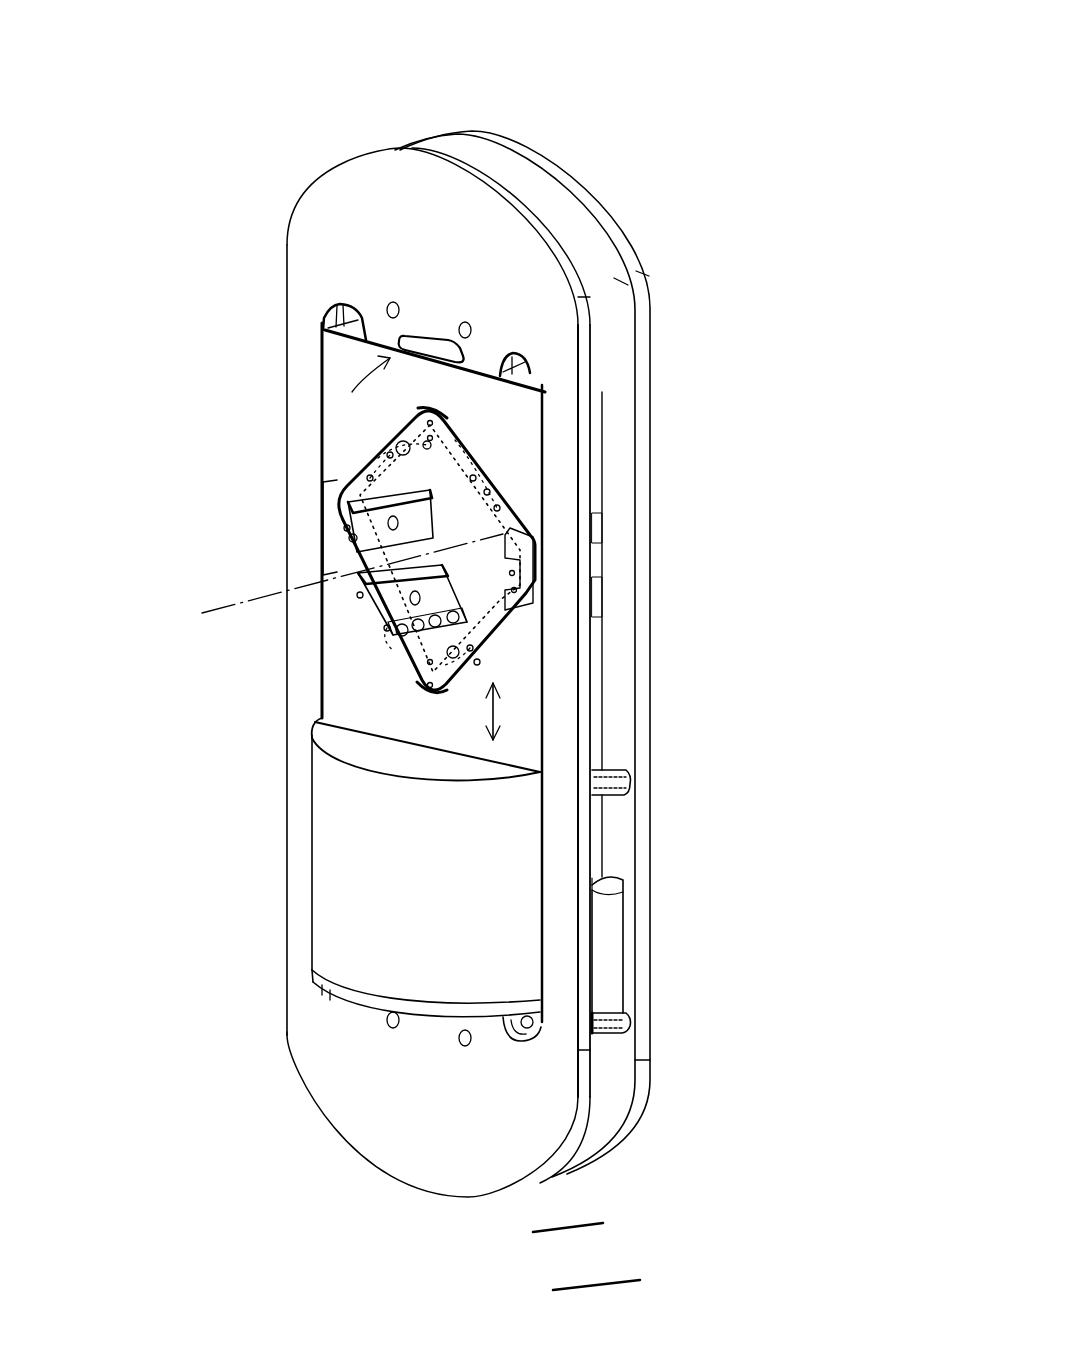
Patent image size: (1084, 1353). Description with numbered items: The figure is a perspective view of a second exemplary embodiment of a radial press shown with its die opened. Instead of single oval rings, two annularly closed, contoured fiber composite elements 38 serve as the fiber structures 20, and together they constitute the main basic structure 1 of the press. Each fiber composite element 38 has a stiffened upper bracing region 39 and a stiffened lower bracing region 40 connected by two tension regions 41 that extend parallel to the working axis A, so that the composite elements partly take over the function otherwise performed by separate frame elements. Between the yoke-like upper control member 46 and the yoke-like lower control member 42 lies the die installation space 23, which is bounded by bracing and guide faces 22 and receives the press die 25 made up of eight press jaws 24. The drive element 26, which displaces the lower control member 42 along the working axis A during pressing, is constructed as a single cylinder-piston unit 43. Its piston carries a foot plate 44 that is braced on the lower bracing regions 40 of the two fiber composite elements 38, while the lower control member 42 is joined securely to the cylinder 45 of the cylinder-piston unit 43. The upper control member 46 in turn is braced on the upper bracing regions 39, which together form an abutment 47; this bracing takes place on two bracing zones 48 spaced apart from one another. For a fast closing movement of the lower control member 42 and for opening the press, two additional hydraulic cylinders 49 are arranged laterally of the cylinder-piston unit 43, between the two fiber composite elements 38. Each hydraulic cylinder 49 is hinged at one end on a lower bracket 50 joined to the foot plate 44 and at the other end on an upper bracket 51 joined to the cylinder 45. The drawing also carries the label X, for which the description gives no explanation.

The main basic structure 1 is at (298, 157).
The fiber structures 20 is at (658, 295).
The bracing and guide faces 22 is at (370, 633).
The die installation space 23 is at (500, 605).
The press jaws 24 is at (520, 565).
The press die 25 is at (323, 510).
The drive element 26 is at (298, 920).
The fiber composite elements 38 is at (302, 285).
The upper bracing region 39 is at (415, 230).
The lower bracing region 40 is at (373, 1082).
The tension regions 41 is at (627, 492).
The lower control member 42 is at (342, 668).
The cylinder-piston unit 43 is at (315, 853).
The foot plate 44 is at (340, 1000).
The cylinder 45 is at (348, 790).
The upper control member 46 is at (355, 412).
The abutment 47 is at (522, 367).
The bracing zones 48 is at (462, 375).
The hydraulic cylinders 49 is at (607, 927).
The lower bracket 50 is at (622, 1020).
The upper bracket 51 is at (610, 777).
The axis X is at (233, 603).
The working axis A is at (498, 712).